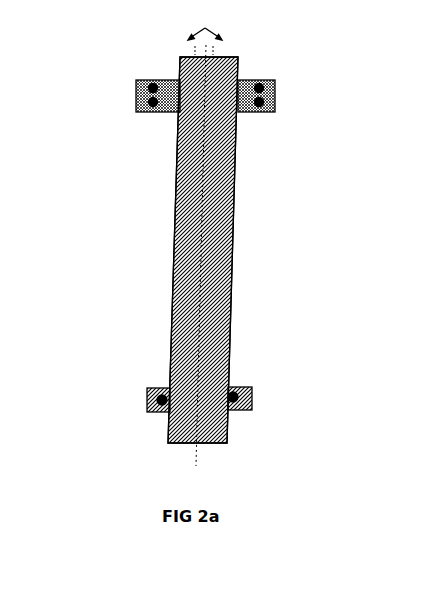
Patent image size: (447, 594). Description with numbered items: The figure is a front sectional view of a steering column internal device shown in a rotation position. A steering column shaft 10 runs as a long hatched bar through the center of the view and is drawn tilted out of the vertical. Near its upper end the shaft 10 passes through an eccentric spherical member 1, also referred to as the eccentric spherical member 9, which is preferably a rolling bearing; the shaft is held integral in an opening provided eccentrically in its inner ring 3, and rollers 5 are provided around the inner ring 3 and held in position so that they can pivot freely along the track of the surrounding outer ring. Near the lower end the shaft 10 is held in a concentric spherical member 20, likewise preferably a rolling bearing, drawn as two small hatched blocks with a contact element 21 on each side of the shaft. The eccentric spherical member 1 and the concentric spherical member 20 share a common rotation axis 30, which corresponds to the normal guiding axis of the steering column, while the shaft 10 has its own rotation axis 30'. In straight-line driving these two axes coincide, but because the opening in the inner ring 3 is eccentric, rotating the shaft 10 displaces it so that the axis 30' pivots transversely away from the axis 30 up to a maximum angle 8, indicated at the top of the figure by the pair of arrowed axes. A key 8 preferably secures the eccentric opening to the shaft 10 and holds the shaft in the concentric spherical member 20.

The eccentric spherical member 1 is at (214, 119).
The inner ring 3 is at (248, 123).
The rollers 5 is at (152, 119).
The key 8 is at (204, 33).
The eccentric spherical member 9 is at (138, 245).
The steering column shaft 10 is at (248, 175).
The concentric spherical member 20 is at (237, 379).
The contact ball 21 is at (244, 382).
The common rotation axis 30 is at (163, 22).
The rotation axis of the steering column shaft 30' is at (242, 23).